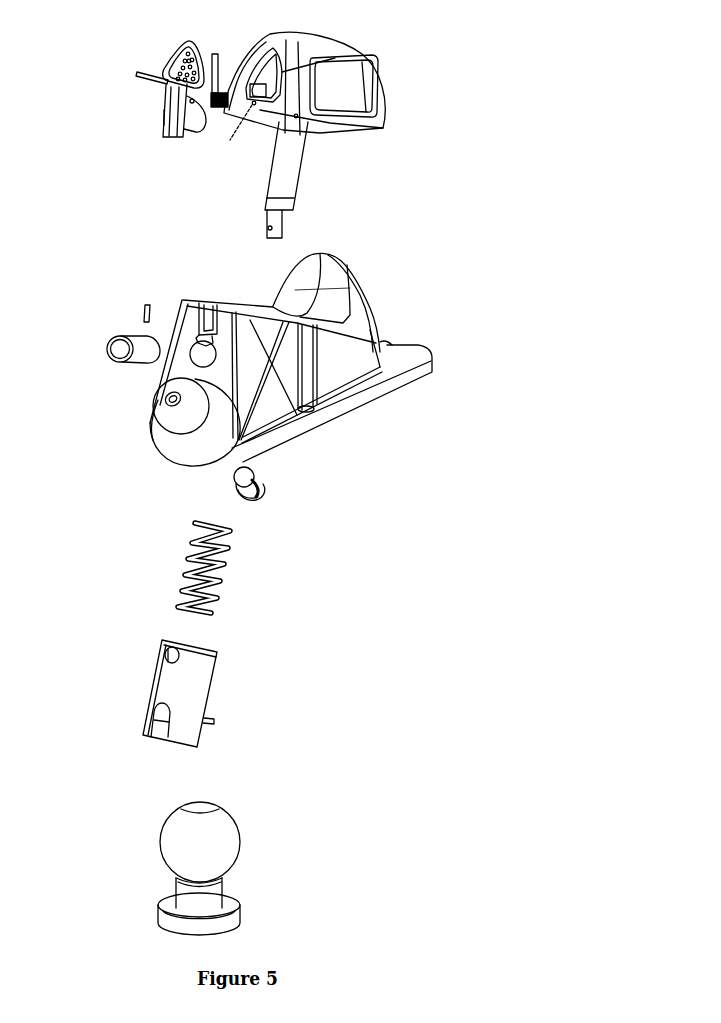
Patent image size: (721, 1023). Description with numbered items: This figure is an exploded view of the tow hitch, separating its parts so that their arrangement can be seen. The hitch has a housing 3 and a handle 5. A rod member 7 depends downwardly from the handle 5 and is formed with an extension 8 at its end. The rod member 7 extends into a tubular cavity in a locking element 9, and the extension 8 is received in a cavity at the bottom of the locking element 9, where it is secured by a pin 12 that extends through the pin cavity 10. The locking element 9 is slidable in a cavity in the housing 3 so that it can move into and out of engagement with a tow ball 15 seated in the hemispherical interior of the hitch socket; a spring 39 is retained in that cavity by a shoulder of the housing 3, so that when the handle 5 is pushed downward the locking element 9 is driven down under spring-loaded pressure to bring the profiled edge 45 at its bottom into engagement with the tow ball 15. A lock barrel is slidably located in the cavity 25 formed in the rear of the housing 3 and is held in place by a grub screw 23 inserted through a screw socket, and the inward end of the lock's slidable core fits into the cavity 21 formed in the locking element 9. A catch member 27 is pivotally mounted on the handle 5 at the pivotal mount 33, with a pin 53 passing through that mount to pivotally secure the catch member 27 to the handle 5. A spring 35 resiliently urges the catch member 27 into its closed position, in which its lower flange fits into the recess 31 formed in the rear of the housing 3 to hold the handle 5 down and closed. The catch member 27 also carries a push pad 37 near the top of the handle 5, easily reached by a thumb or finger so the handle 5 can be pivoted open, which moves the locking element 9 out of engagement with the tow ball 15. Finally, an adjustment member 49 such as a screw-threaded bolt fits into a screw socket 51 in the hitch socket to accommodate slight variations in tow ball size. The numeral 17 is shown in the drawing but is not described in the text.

The housing 3 is at (370, 325).
The handle 5 is at (393, 73).
The rod member 7 is at (295, 170).
The extension 8 is at (265, 228).
The locking element 9 is at (205, 681).
The pin cavity 10 is at (262, 232).
The pin 12 is at (218, 722).
The tow ball 15 is at (230, 860).
The sleeve 17 is at (143, 370).
The cavity 21 is at (165, 655).
The grub screw 23 is at (140, 310).
The cavity 25 is at (192, 360).
The catch member 27 is at (162, 113).
The recess 31 is at (197, 358).
The pivotal mount 33 is at (230, 140).
The spring 35 is at (219, 54).
The push pad 37 is at (168, 66).
The spring 39 is at (228, 566).
The profiled edge 45 is at (153, 735).
The adjustment member 49 is at (265, 490).
The screw socket 51 is at (159, 401).
The pin 53 is at (137, 73).